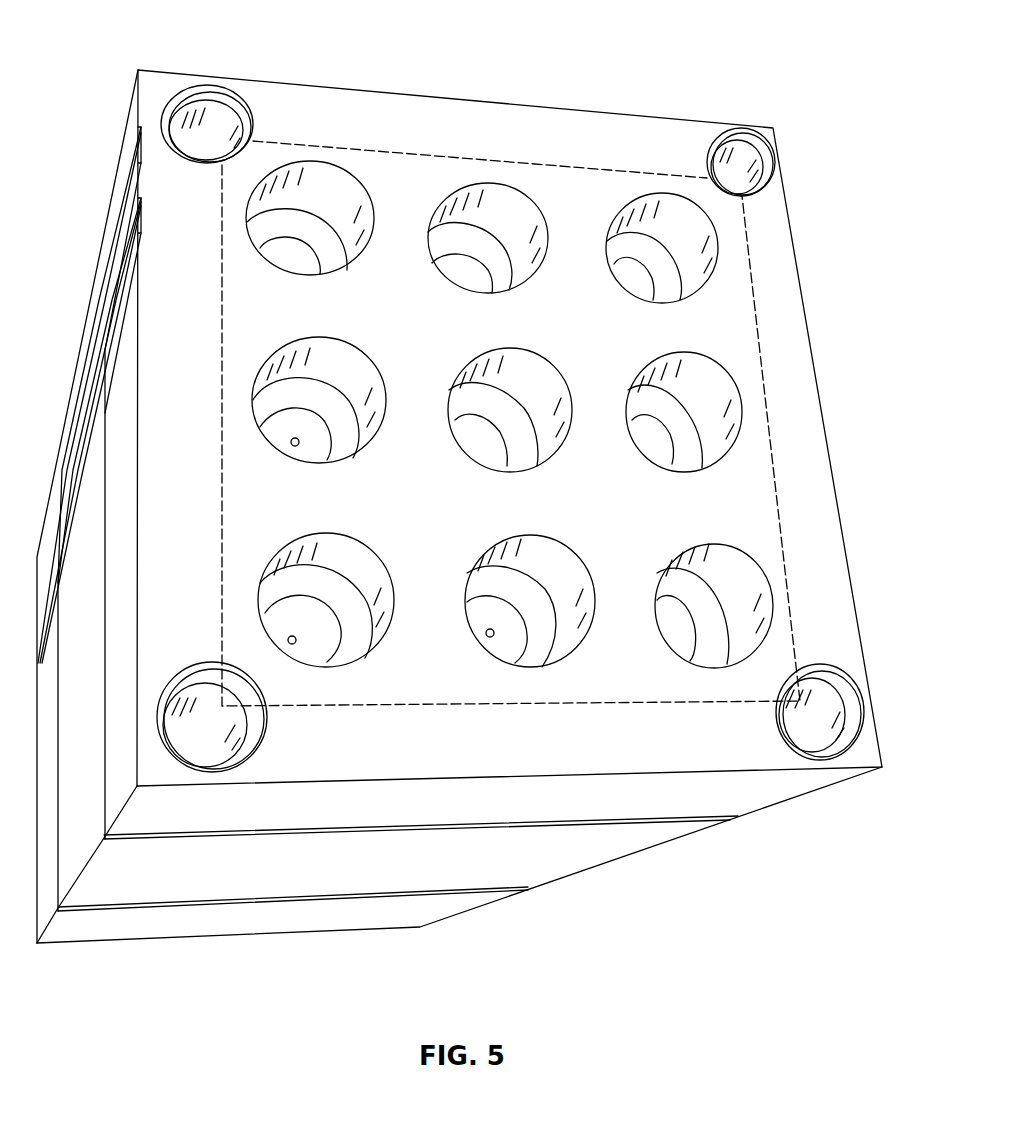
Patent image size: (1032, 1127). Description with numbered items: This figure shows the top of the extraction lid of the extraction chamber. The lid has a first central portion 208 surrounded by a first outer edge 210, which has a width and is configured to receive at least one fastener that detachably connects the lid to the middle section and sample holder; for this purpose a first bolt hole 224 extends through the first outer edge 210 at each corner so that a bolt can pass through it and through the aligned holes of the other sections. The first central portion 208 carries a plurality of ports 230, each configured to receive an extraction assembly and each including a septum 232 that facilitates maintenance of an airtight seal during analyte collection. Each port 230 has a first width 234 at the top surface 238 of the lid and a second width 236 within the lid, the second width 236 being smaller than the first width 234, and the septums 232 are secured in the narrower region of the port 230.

The first central portion 208 is at (578, 185).
The first outer edge 210 is at (451, 130).
The first bolt hole 224 is at (244, 112).
The port 230 is at (722, 263).
The septum 232 is at (313, 637).
The first width 234 is at (707, 403).
The second width 236 is at (690, 430).
The top surface 238 is at (427, 667).